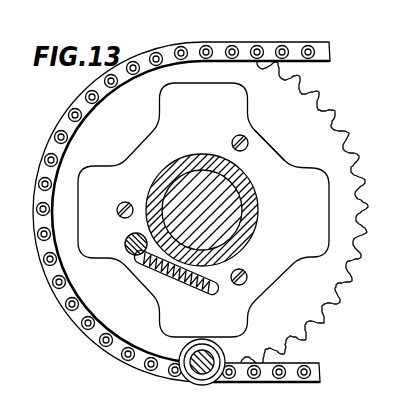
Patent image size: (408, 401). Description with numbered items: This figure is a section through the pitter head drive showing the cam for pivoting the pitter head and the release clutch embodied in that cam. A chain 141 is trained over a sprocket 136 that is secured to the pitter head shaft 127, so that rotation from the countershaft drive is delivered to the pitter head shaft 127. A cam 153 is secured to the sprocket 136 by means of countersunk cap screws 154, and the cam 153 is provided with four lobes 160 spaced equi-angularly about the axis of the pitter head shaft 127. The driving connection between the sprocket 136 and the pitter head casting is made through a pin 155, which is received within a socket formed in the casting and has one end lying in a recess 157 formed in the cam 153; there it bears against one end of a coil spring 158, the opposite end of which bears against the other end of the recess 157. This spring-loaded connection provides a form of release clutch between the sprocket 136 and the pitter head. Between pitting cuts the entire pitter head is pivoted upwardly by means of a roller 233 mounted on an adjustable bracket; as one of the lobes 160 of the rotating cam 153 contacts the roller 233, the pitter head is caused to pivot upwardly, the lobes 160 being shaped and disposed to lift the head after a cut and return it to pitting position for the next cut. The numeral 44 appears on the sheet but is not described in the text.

The chain 141 is at (307, 42).
The sprocket 136 is at (358, 161).
The lobes 160 is at (162, 99).
The cam 153 is at (268, 151).
The countersunk cap screws 154 is at (232, 143).
The pitter head shaft 127 is at (236, 212).
The pin 155 is at (126, 237).
The recess 157 is at (131, 258).
The coil spring 158 is at (148, 266).
The roller 233 is at (190, 384).
The frame 44 is at (373, 400).